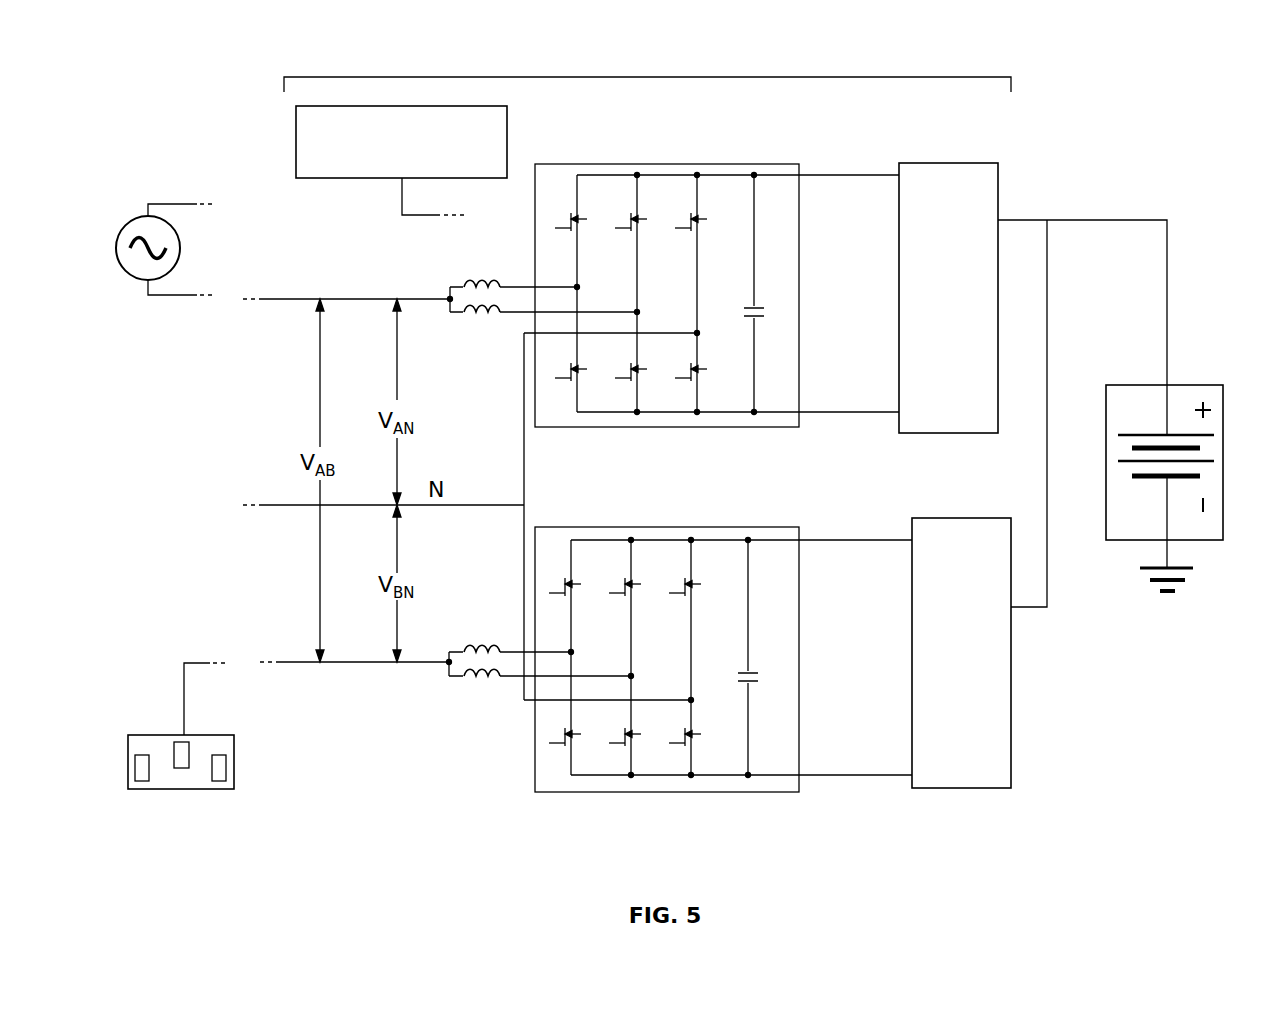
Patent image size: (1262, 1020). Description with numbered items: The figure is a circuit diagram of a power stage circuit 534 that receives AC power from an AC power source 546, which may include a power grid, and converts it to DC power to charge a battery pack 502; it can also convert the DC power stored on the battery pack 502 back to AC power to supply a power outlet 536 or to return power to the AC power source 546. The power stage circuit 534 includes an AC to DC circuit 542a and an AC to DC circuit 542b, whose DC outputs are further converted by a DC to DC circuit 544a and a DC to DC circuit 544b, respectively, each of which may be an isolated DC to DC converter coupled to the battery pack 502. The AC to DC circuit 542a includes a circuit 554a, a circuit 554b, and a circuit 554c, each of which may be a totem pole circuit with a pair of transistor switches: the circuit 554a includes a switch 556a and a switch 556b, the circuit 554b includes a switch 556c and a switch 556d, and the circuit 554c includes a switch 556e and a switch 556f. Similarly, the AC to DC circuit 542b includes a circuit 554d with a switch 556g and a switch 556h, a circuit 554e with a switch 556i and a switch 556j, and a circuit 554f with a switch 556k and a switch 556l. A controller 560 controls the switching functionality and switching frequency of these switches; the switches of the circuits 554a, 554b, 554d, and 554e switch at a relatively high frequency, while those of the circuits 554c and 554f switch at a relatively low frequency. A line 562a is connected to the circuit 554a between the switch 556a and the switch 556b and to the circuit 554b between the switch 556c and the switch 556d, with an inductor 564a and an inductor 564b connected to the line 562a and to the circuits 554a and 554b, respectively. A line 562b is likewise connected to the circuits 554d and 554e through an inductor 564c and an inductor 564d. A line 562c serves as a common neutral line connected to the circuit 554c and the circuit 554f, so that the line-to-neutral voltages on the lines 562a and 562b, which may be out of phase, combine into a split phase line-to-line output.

The battery pack 502 is at (1120, 540).
The power stage circuit 534 is at (650, 77).
The power outlet 536 is at (188, 789).
The AC to DC circuit 542a is at (776, 164).
The AC to DC circuit 542b is at (770, 793).
The DC to DC circuit 544a is at (948, 298).
The DC to DC circuit 544b is at (961, 653).
The AC power source 546 is at (140, 218).
The circuit 554a is at (577, 262).
The circuit 554b is at (637, 262).
The circuit 554c is at (697, 352).
The circuit 554d is at (571, 612).
The circuit 554e is at (631, 622).
The circuit 554f is at (691, 720).
The switch 556a is at (572, 218).
The switch 556b is at (572, 386).
The switch 556c is at (632, 218).
The switch 556d is at (632, 386).
The switch 556e is at (692, 218).
The switch 556f is at (692, 386).
The switch 556g is at (566, 582).
The switch 556h is at (566, 750).
The switch 556i is at (626, 582).
The switch 556j is at (626, 750).
The switch 556k is at (686, 582).
The switch 556l is at (686, 750).
The controller 560 is at (401, 160).
The line 562a is at (318, 298).
The line 562b is at (295, 663).
The line 562c is at (480, 504).
The inductor 564a is at (463, 275).
The inductor 564b is at (478, 315).
The inductor 564c is at (470, 640).
The inductor 564d is at (478, 680).